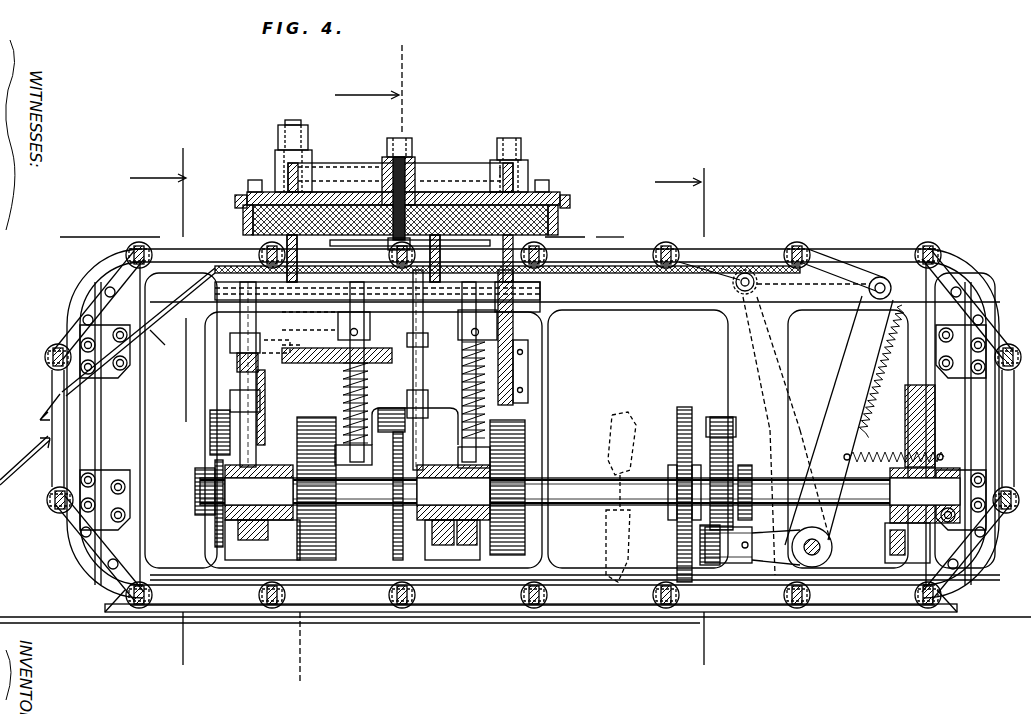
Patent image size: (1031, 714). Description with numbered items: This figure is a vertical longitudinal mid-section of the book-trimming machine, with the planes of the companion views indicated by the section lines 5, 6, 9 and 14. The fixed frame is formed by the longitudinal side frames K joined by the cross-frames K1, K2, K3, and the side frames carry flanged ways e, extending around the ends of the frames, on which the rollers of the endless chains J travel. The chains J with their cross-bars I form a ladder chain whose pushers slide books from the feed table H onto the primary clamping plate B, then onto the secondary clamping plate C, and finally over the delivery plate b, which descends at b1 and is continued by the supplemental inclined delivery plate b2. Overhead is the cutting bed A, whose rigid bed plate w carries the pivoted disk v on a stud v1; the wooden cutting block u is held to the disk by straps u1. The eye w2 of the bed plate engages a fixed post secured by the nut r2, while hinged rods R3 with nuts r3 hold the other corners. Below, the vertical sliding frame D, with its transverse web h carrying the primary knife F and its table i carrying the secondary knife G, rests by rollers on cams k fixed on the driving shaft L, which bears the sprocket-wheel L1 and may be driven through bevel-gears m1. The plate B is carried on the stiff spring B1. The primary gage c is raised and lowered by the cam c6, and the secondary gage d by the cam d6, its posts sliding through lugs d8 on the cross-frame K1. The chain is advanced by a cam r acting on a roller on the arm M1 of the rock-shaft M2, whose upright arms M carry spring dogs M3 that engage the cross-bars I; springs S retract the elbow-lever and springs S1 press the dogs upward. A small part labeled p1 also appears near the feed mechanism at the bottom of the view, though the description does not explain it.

The section line 9— 9 is at (158, 409).
The section line 6— 6 is at (342, 368).
The section line 14— 14 is at (685, 415).
The section line 5— 5 is at (342, 226).
The endless chains J is at (868, 258).
The cross-bars I is at (667, 252).
The feed table H is at (620, 274).
The ways e is at (975, 300).
The side frames K is at (572, 426).
The driving shaft L is at (566, 480).
The cross-frame K2 is at (470, 540).
The cross-frame K3 is at (925, 420).
The cams k is at (360, 492).
The cam c6 is at (392, 540).
The sprocket-wheel L1 is at (700, 378).
The cam r is at (729, 473).
The bevel-gears m1 is at (629, 497).
The arm M1 is at (742, 545).
The rock-shaft M2 is at (820, 547).
The pawl p1 is at (718, 568).
The arms M is at (839, 411).
The spring dogs or pawls M3 is at (845, 282).
The springs S1 is at (862, 428).
The springs S is at (894, 466).
The cutting bed A is at (450, 185).
The bed plate w is at (399, 176).
The cutting block u is at (403, 213).
The straps or flanges u1 is at (558, 220).
The stud v1 is at (382, 163).
The open eye or hook w2 is at (274, 161).
The nut r2 is at (279, 130).
The nuts r3 is at (524, 152).
The pivoted rods or bars R3 is at (511, 136).
The disk v is at (240, 200).
The clamping plate B is at (476, 270).
The clamping plate C is at (410, 246).
The primary gage c is at (441, 250).
The secondary gage d is at (298, 255).
The primary trimming knife F is at (520, 292).
The vertical transverse web h is at (528, 372).
The knife G is at (389, 336).
The horizontal transverse table i is at (392, 356).
The sliding frame D is at (412, 375).
The spring B1 is at (466, 400).
The lugs d8 is at (230, 342).
The cross-frame K1 is at (232, 376).
The cam d6 is at (212, 437).
The delivery plate b is at (216, 265).
The descending portion of delivery plate b1 is at (146, 340).
The supplemental inclined delivery plate b2 is at (25, 460).